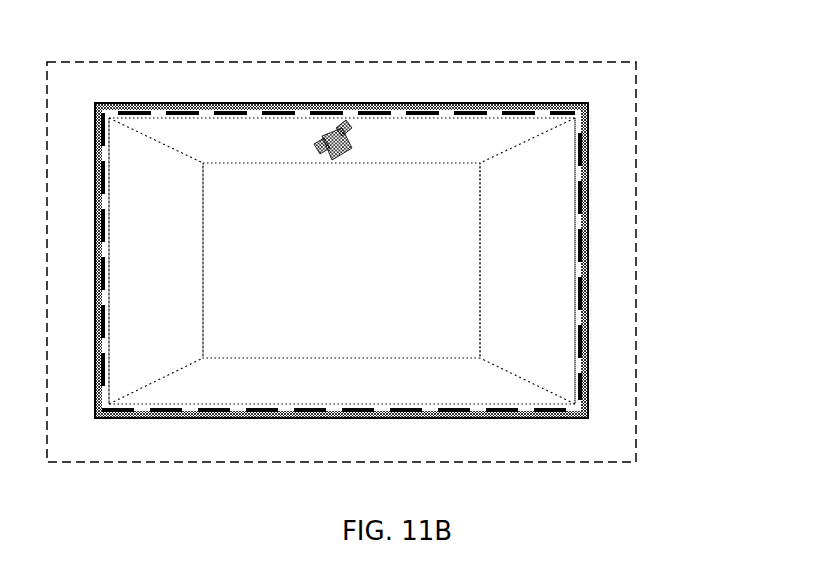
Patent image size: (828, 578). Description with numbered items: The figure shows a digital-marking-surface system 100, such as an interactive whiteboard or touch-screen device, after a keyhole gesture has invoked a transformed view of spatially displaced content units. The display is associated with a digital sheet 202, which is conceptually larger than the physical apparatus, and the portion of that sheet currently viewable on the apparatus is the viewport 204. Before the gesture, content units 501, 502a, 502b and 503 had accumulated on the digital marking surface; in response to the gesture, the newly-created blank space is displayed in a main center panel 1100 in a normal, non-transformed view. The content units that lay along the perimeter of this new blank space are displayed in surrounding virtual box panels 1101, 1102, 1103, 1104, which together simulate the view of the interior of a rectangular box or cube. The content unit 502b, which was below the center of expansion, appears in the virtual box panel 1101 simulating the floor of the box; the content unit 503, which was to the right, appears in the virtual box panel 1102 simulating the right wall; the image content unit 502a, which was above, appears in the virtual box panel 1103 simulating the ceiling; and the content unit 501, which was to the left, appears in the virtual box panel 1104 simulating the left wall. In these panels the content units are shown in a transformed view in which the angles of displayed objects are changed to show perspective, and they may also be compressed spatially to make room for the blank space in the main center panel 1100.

The digital sheet 202 is at (639, 80).
The digital-marking-surface system 100 is at (592, 129).
The viewport 204 is at (585, 200).
The content unit 501 is at (128, 190).
The image content unit 502a is at (312, 135).
The content unit 502b is at (296, 378).
The content unit 503 is at (507, 210).
The main center panel 1100 is at (341, 260).
The virtual box panel 1101 is at (342, 381).
The virtual box panel 1102 is at (527, 261).
The virtual box panel 1103 is at (342, 140).
The virtual box panel 1104 is at (156, 261).